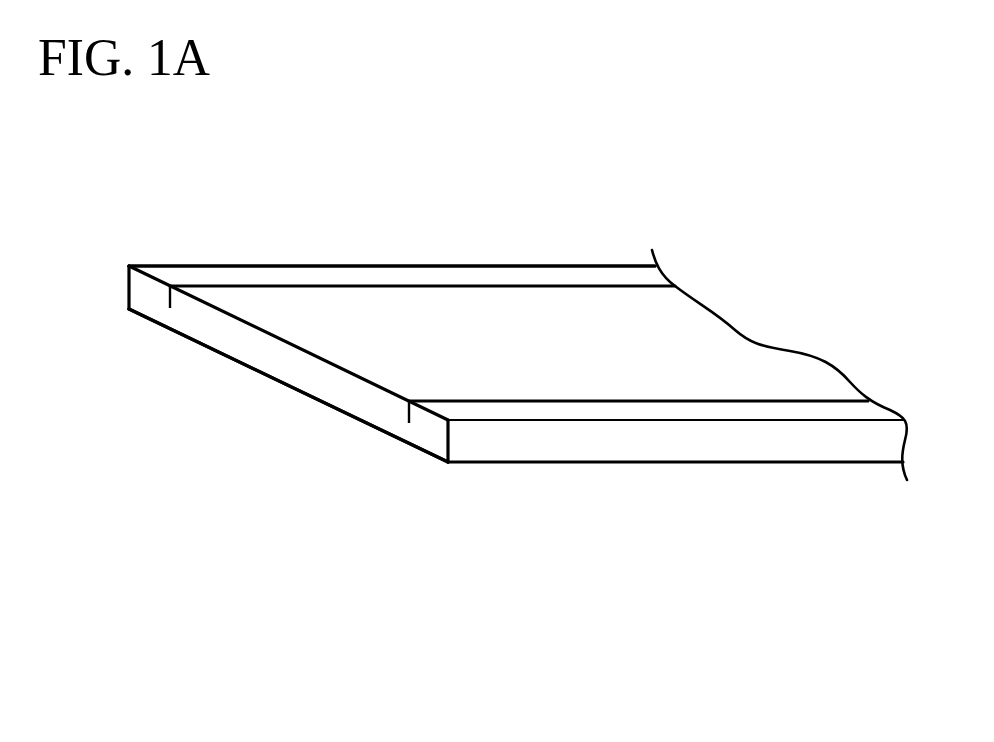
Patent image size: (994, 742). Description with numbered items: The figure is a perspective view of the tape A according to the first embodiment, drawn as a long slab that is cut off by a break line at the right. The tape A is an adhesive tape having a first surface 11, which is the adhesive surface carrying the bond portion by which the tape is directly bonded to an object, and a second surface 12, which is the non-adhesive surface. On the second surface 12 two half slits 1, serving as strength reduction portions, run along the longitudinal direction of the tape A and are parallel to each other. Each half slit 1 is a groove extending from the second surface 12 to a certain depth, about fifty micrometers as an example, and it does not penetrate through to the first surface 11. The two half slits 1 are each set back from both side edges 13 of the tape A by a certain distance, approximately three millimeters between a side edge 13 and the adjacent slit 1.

The half slit 1 is at (318, 285).
The first surface 11 is at (355, 398).
The second surface 12 is at (365, 358).
The side edge 13 is at (550, 440).
The tape A is at (228, 265).